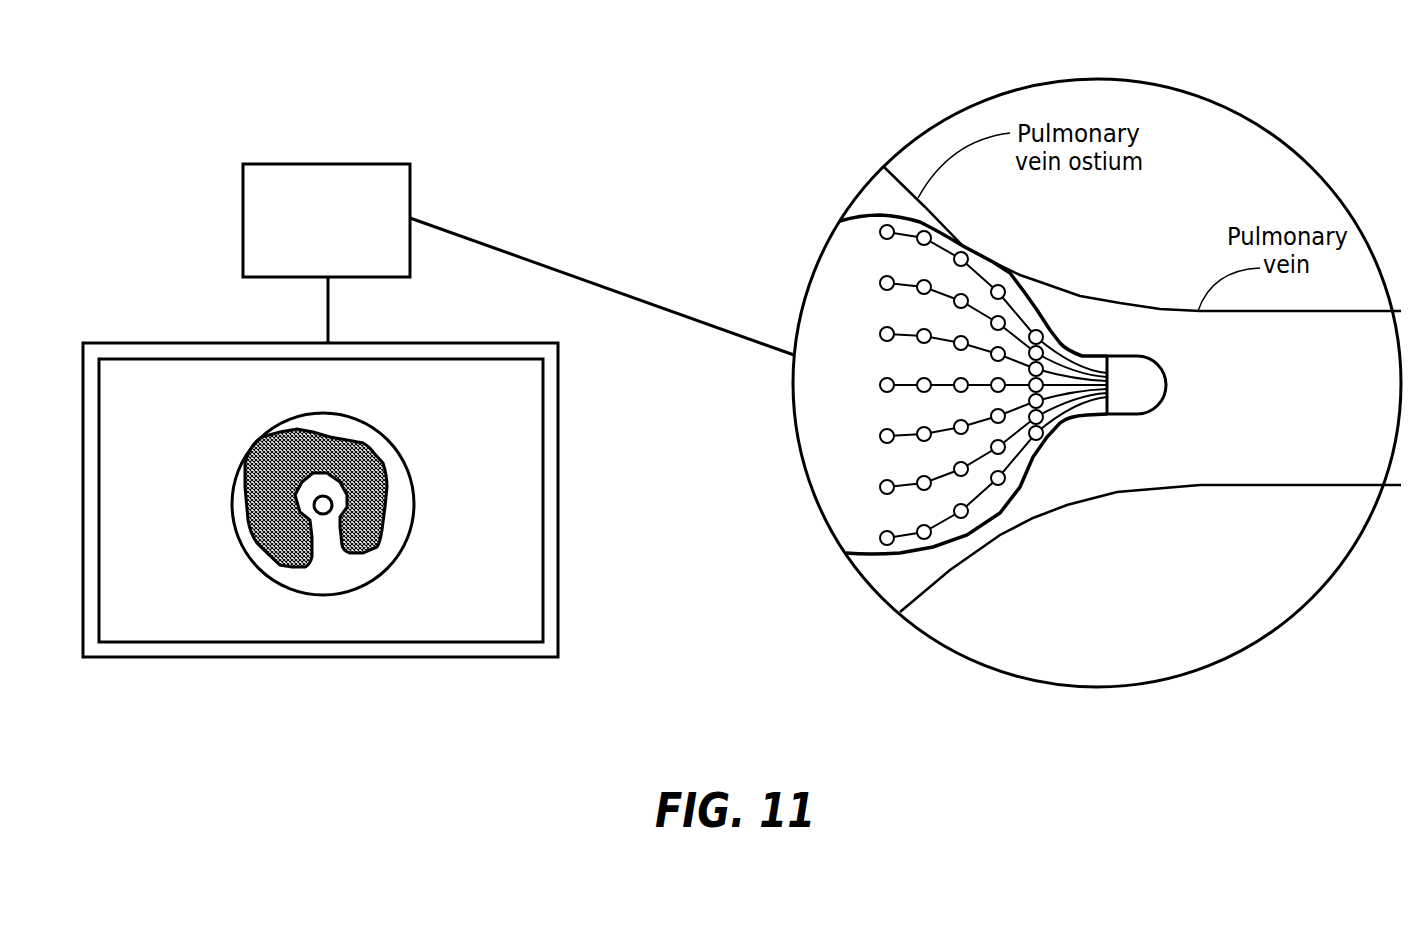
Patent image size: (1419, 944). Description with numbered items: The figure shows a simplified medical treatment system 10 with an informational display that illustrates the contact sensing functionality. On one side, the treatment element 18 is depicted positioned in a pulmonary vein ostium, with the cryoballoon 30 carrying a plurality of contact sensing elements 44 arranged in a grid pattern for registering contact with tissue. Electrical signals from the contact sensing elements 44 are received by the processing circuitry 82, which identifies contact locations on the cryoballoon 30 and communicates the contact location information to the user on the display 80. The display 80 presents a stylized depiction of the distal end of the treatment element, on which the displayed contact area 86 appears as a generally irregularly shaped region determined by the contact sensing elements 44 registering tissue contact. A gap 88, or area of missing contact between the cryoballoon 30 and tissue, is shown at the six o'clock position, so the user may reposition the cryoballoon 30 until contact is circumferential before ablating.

The system 10 is at (448, 112).
The treatment element 18 is at (830, 230).
The cryoballoon 30 is at (1030, 300).
The contact sensing elements 44 is at (1040, 440).
The display 80 is at (558, 594).
The processing circuitry 82 is at (326, 220).
The displayed contact area 86 is at (377, 545).
The gap 88 is at (327, 573).